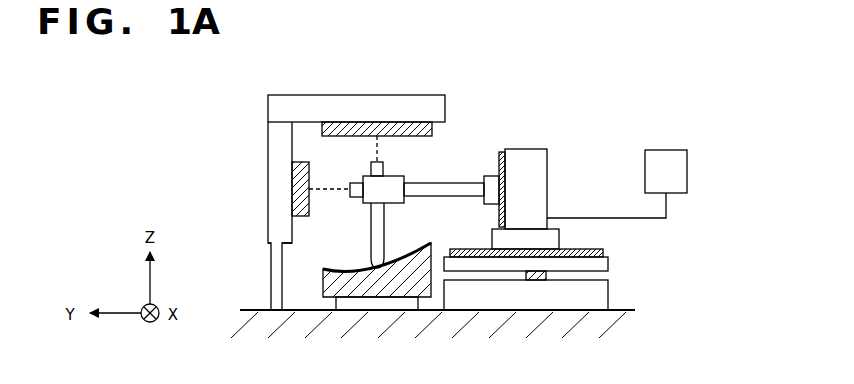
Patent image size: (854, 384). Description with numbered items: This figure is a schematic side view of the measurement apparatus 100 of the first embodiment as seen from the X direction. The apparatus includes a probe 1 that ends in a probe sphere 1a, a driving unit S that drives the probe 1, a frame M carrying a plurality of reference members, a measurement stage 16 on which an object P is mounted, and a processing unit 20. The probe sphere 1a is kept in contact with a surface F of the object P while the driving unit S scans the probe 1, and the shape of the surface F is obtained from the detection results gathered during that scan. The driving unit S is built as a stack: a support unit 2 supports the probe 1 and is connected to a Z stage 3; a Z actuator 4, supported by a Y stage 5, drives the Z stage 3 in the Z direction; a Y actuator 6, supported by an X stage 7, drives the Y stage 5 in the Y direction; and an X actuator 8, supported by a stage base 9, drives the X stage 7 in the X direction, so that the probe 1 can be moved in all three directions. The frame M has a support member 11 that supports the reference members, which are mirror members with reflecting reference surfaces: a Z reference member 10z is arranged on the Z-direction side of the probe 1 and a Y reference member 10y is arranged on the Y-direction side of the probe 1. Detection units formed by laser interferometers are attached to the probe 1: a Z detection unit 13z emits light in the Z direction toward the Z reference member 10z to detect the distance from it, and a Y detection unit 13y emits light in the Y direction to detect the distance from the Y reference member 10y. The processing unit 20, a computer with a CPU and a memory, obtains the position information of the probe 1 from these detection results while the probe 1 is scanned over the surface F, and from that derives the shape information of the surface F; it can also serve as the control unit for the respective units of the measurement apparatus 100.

The measurement apparatus 100 is at (656, 106).
The frame M is at (286, 85).
The support member 11 is at (421, 95).
The Z reference member 10z is at (366, 125).
The Y reference member 10y is at (292, 181).
The Z detection unit 13z is at (384, 167).
The Y detection unit 13y is at (352, 182).
The probe 1 is at (371, 232).
The probe sphere 1a is at (371, 265).
The support unit 2 is at (448, 183).
The driving unit S is at (568, 145).
The Z stage 3 is at (490, 176).
The Z actuator 4 is at (502, 152).
The Y stage 5 is at (547, 186).
The Y actuator 6 is at (603, 253).
The X stage 7 is at (608, 263).
The X actuator 8 is at (537, 280).
The stage base 9 is at (608, 295).
The processing unit 20 is at (687, 162).
The surface of the object F is at (420, 258).
The measurement stage 16 is at (336, 305).
The object P is at (402, 311).